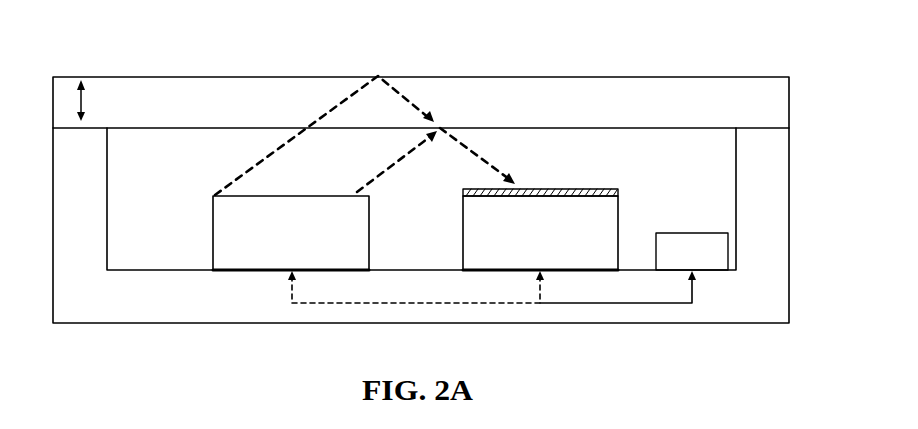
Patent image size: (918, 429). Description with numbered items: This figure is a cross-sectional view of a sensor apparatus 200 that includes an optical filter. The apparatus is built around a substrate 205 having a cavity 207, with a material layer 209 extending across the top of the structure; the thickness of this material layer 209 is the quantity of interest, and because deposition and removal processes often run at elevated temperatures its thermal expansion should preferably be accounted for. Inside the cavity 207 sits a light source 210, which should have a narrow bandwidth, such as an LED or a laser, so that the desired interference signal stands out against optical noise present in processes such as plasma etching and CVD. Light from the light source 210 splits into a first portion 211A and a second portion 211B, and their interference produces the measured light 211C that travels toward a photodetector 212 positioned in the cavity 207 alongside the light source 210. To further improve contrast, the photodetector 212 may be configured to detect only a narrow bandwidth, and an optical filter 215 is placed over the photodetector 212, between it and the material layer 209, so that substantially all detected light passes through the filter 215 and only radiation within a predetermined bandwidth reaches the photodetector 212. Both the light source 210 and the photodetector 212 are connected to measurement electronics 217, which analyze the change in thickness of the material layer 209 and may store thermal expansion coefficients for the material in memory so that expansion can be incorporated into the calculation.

The sensor apparatus 200 is at (724, 15).
The substrate 205 is at (188, 318).
The cavity 207 is at (699, 176).
The material layer 209 is at (686, 115).
The light source 210 is at (309, 248).
The photodetector 212 is at (558, 248).
The optical filter 215 is at (600, 189).
The measurement electronics 217 is at (705, 272).
The first portion of light 211A is at (324, 135).
The second portion of light 211B is at (398, 174).
The measured light 211C is at (502, 156).